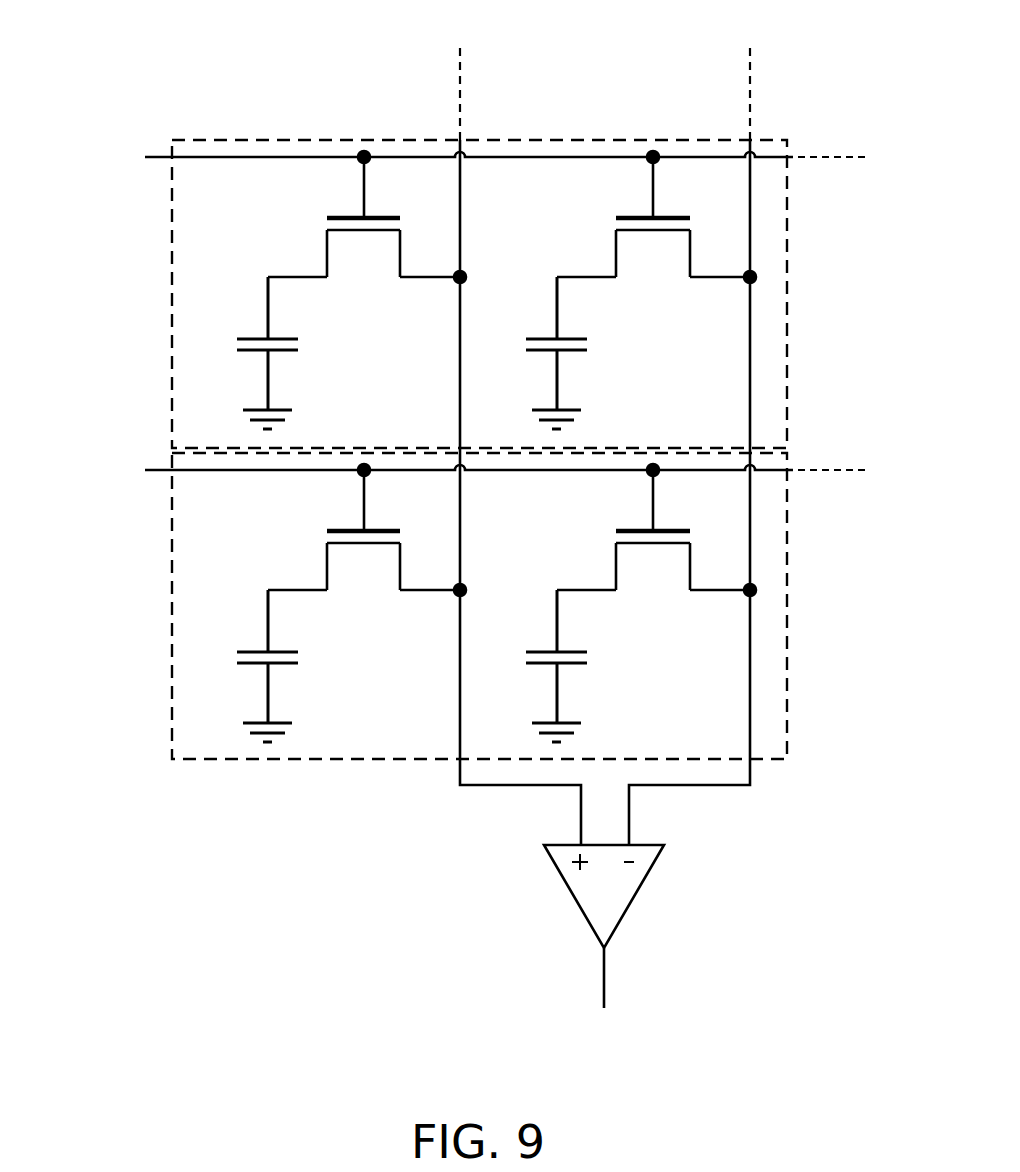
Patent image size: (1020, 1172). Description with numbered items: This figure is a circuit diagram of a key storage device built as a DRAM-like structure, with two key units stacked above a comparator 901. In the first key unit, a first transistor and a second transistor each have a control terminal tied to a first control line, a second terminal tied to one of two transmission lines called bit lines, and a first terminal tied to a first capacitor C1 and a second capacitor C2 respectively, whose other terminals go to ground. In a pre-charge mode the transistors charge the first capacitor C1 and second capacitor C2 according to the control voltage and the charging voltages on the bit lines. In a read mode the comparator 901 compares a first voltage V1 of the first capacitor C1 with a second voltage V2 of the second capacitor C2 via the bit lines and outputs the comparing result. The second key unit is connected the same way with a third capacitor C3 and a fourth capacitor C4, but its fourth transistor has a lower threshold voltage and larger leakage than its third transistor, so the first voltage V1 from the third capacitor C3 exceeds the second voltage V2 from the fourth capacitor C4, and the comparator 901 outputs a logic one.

The first capacitor C1 is at (252, 338).
The second capacitor C2 is at (541, 338).
The third capacitor C3 is at (252, 651).
The fourth capacitor C4 is at (541, 651).
The first voltage V1 is at (560, 817).
The second voltage V2 is at (653, 817).
The comparator 901 is at (637, 897).